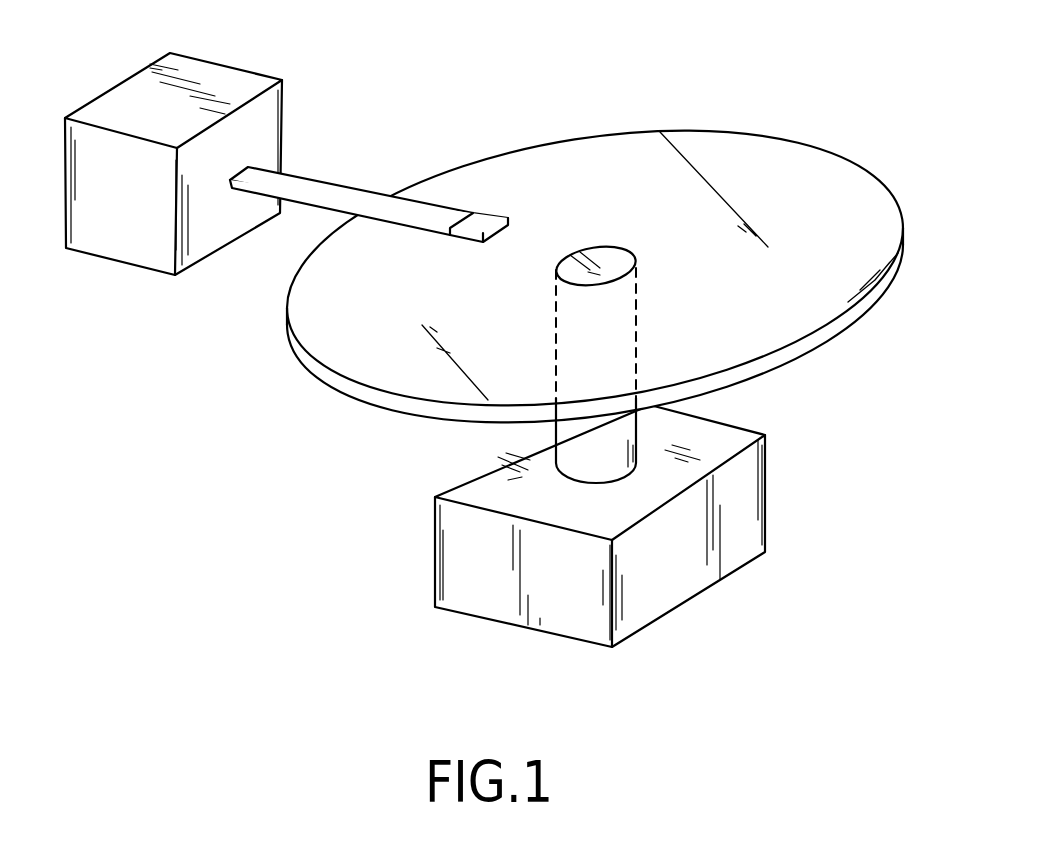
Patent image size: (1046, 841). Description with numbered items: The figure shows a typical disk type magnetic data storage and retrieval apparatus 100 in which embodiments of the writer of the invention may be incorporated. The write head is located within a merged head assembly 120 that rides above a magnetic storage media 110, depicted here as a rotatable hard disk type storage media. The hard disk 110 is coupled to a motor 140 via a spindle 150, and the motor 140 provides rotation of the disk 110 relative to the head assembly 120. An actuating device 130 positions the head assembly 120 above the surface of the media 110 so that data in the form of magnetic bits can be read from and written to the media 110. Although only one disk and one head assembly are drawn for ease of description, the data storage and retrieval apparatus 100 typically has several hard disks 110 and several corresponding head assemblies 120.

The data storage and retrieval apparatus 100 is at (234, 362).
The magnetic storage media 110 is at (785, 150).
The merged head assembly 120 is at (484, 217).
The actuating device 130 is at (130, 241).
The motor 140 is at (740, 427).
The spindle 150 is at (557, 440).